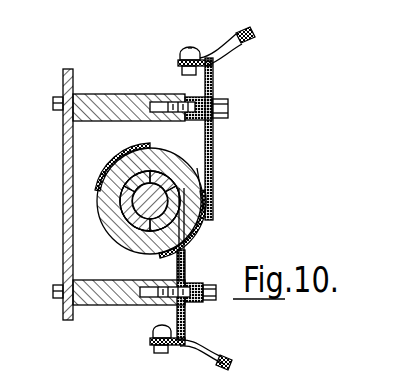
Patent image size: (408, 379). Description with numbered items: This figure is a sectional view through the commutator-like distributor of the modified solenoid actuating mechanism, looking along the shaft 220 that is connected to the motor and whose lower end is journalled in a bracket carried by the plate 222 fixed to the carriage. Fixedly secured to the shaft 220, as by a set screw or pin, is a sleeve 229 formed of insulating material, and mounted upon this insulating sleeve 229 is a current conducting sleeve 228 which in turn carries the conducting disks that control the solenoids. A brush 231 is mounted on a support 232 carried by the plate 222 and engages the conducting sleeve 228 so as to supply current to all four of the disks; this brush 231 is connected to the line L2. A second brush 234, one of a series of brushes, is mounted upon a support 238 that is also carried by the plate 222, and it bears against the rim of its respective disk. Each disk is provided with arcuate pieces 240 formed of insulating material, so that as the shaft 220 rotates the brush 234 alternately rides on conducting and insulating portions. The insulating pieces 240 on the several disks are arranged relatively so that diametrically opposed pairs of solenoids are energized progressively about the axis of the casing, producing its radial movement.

The shaft 220 is at (152, 190).
The plate 222 is at (66, 211).
The current conducting sleeve 228 is at (113, 242).
The sleeve formed of insulating material 229 is at (146, 175).
The brush 231 is at (187, 248).
The support 232 is at (117, 300).
The brush 234 is at (212, 168).
The support 238 is at (115, 102).
The arcuate pieces 240 is at (113, 164).
The line L2 is at (232, 365).